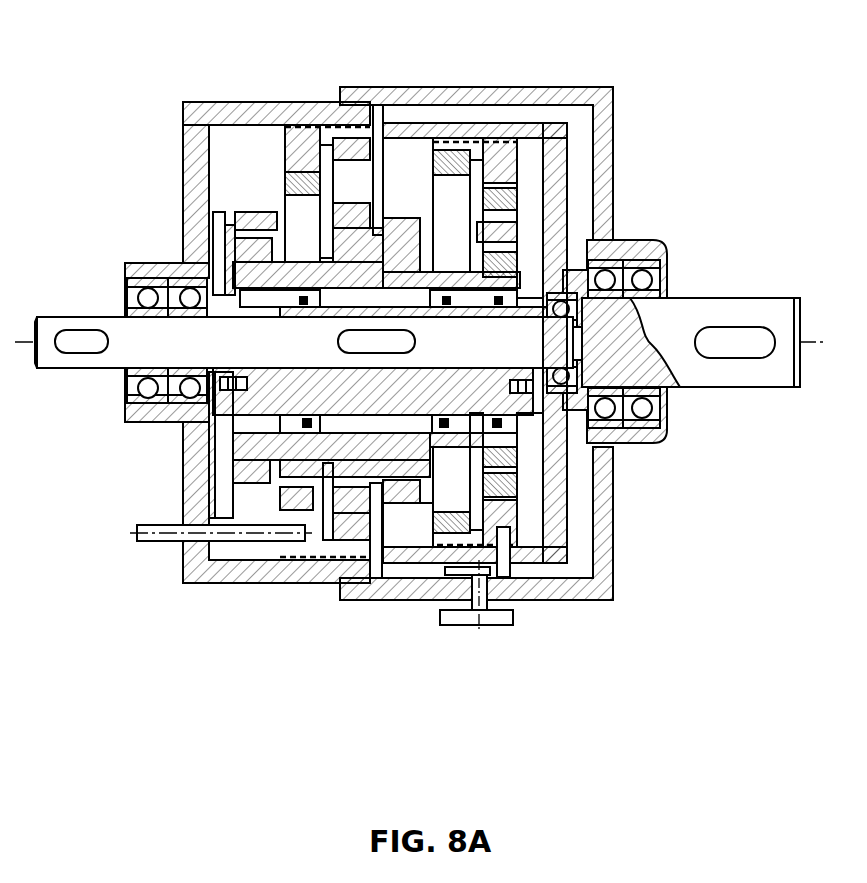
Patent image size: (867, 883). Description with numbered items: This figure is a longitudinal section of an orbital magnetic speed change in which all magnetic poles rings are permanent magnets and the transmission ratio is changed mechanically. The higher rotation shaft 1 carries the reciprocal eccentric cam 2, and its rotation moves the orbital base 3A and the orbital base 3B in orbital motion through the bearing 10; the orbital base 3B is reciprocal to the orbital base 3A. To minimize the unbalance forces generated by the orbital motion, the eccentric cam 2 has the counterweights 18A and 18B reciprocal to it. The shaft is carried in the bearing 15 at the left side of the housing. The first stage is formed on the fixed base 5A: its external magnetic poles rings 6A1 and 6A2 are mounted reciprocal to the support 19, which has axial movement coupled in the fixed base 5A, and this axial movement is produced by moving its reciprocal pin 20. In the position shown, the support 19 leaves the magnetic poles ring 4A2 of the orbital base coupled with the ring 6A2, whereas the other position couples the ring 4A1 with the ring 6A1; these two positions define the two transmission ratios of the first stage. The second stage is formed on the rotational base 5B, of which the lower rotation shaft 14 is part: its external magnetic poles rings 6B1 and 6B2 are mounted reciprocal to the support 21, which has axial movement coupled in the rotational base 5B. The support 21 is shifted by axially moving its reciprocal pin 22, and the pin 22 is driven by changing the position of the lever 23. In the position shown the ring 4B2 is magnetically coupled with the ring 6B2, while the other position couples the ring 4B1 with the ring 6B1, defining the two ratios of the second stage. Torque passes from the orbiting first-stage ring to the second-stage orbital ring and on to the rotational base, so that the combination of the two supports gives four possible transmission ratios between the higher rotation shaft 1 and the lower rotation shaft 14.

The higher rotation shaft 1 is at (112, 360).
The eccentric cam 2 is at (277, 398).
The orbital base 3A is at (263, 282).
The orbital base 3B is at (477, 285).
The magnetic poles ring 4A1 is at (248, 475).
The magnetic poles ring 4A2 is at (352, 507).
The magnetic poles ring 4B1 is at (407, 493).
The magnetic poles ring 4B2 is at (500, 460).
The fixed base 5A is at (193, 565).
The rotational base 5B is at (560, 547).
The magnetic poles ring 6A1 is at (310, 183).
The magnetic poles ring 6A2 is at (350, 138).
The magnetic poles ring 6B1 is at (453, 160).
The magnetic poles ring 6B2 is at (517, 195).
The bearing 10 is at (237, 425).
The lower rotation shaft 14 is at (727, 397).
The input bearing 15 is at (148, 297).
The counterweight 18A is at (238, 213).
The counterweight 18B is at (503, 232).
The support 19 is at (290, 127).
The pin 20 is at (147, 532).
The support 21 is at (517, 145).
The pin 22 is at (503, 572).
The lever 23 is at (483, 617).